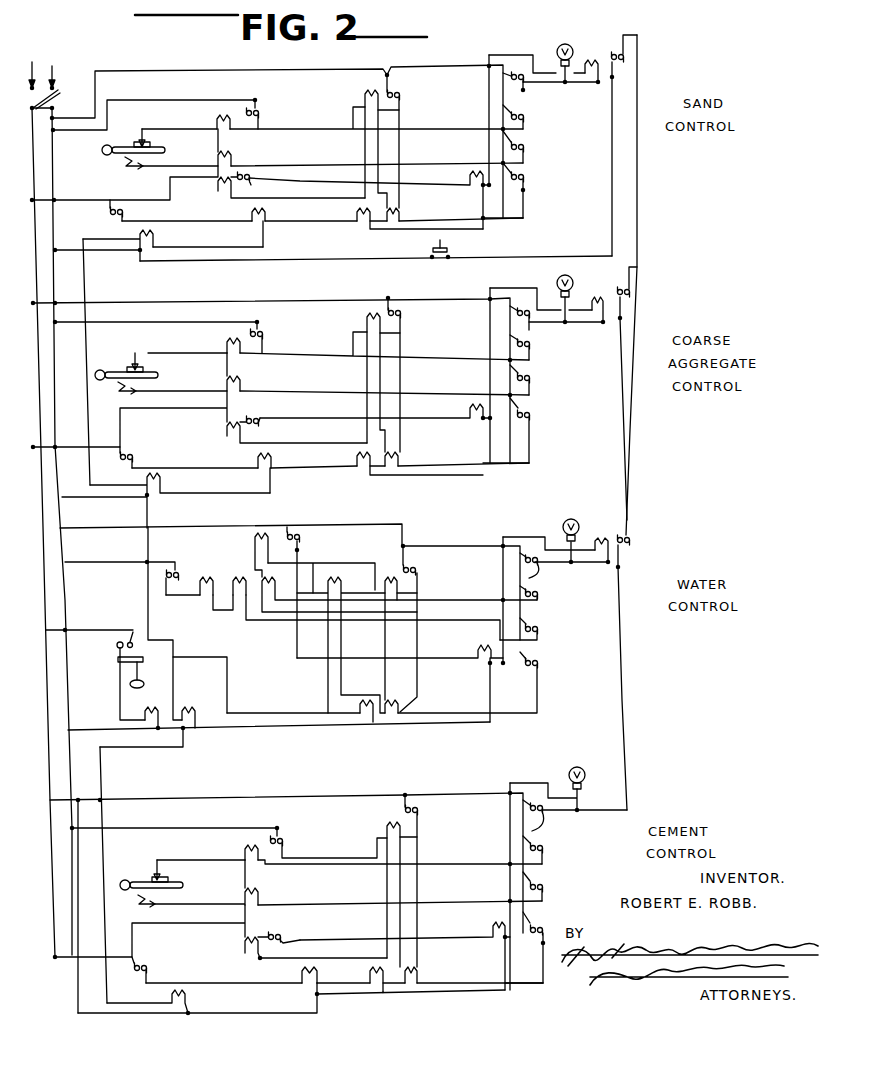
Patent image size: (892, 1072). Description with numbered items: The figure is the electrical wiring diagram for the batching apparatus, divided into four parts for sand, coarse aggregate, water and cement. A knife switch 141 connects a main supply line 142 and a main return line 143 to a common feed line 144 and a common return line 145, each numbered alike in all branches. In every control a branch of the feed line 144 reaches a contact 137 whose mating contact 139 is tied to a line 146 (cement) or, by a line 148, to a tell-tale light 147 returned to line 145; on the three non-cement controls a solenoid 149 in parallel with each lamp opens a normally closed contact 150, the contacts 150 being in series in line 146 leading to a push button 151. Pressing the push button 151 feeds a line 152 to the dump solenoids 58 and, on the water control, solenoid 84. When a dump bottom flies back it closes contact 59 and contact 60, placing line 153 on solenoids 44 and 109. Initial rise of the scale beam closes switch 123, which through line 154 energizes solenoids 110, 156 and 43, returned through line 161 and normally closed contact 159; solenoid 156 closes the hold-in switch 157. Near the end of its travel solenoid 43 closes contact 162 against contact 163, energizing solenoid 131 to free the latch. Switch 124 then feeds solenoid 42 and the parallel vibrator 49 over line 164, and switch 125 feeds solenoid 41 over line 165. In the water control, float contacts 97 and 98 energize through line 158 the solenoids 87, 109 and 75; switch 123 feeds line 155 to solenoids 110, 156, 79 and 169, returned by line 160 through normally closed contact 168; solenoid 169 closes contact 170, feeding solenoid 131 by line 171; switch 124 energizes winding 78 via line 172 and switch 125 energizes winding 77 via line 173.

The solenoid 41 is at (216, 116).
The solenoid 42 is at (232, 158).
The solenoid 43 is at (216, 188).
The solenoid 44 is at (267, 212).
The vibrator 49 is at (138, 142).
The solenoid 58 is at (154, 237).
The contact 59 is at (108, 210).
The contact 60 is at (139, 595).
The solenoid 75 is at (357, 641).
The winding 77 is at (209, 578).
The winding 78 is at (240, 578).
The solenoid 79 is at (399, 586).
The solenoid 84 is at (156, 723).
The solenoid 87 is at (158, 710).
The contact 97 is at (117, 655).
The contact 98 is at (98, 632).
The solenoid 109 is at (356, 214).
The solenoid 110 is at (399, 212).
The switch 123 is at (525, 179).
The switch 124 is at (525, 149).
The switch 125 is at (525, 119).
The solenoid 131 is at (468, 180).
The contact 137 is at (522, 72).
The mating contact 139 is at (546, 458).
The knife switch 141 is at (58, 102).
The main supply line 142 is at (33, 66).
The main return line 143 is at (58, 68).
The common feed line 144 is at (505, 103).
The common return line 145 is at (204, 98).
The line 146 is at (638, 188).
The tell-tale light 147 is at (567, 44).
The line 148 is at (566, 334).
The solenoid 149 is at (594, 45).
The normally closed contact 150 is at (628, 56).
The push button 151 is at (450, 245).
The line 152 is at (328, 258).
The line 153 is at (198, 220).
The line 154 is at (400, 112).
The line 155 is at (254, 548).
The solenoid 156 is at (362, 96).
The normally open switch 157 is at (400, 92).
The line 158 is at (118, 704).
The normally closed contact 159 is at (260, 113).
The line 160 is at (182, 600).
The line 161 is at (305, 125).
The contact 162 is at (250, 174).
The contact 163 is at (252, 184).
The line 164 is at (305, 163).
The line 165 is at (458, 128).
The normally closed contact 168 is at (178, 574).
The solenoid 169 is at (260, 524).
The normally open contact 170 is at (300, 537).
The line 171 is at (349, 660).
The line 172 is at (270, 622).
The line 173 is at (222, 612).